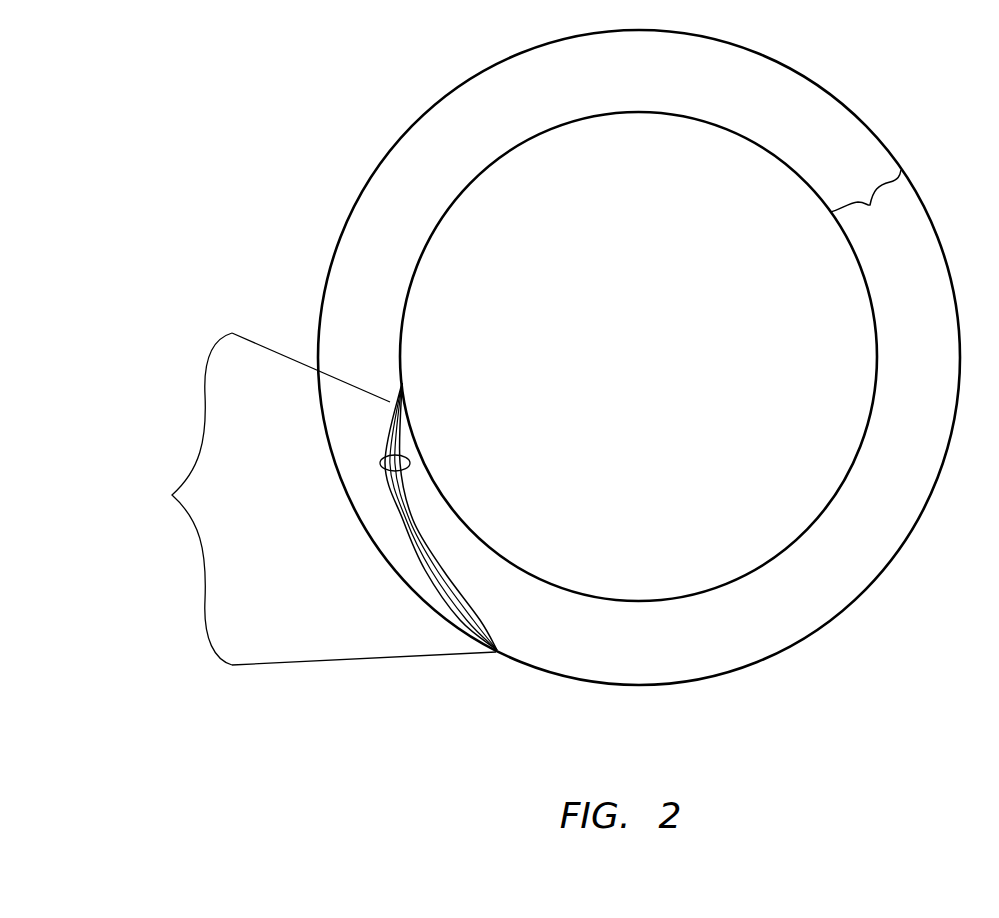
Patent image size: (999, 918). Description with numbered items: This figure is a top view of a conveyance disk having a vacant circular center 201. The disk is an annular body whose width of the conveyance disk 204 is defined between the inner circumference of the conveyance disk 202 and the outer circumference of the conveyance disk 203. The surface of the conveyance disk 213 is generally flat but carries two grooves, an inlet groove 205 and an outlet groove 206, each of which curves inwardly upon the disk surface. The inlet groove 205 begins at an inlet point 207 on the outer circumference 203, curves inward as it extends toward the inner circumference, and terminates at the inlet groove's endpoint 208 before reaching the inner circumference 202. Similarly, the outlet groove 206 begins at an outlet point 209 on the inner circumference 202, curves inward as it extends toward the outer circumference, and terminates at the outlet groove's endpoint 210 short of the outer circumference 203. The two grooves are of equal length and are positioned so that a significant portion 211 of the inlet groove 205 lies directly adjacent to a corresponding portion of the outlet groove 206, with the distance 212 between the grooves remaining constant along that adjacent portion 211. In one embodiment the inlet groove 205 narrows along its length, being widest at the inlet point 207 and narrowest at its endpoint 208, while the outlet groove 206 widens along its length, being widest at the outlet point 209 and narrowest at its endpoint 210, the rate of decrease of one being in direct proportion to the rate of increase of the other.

The vacant circular center 201 is at (528, 183).
The inner circumference of the conveyance disk 202 is at (875, 387).
The outer circumference of the conveyance disk 203 is at (872, 582).
The width of the conveyance disk 204 is at (870, 205).
The inlet groove 205 is at (403, 520).
The outlet groove 206 is at (408, 503).
The inlet point 207 is at (495, 651).
The inlet groove's endpoint 208 is at (390, 402).
The outlet point 209 is at (402, 383).
The outlet groove's endpoint 210 is at (480, 628).
The portion of the grooves directly adjacent to one another 211 is at (317, 499).
The distance between the inlet groove and the outlet groove 212 is at (380, 463).
The surface of the conveyance disk 213 is at (407, 183).